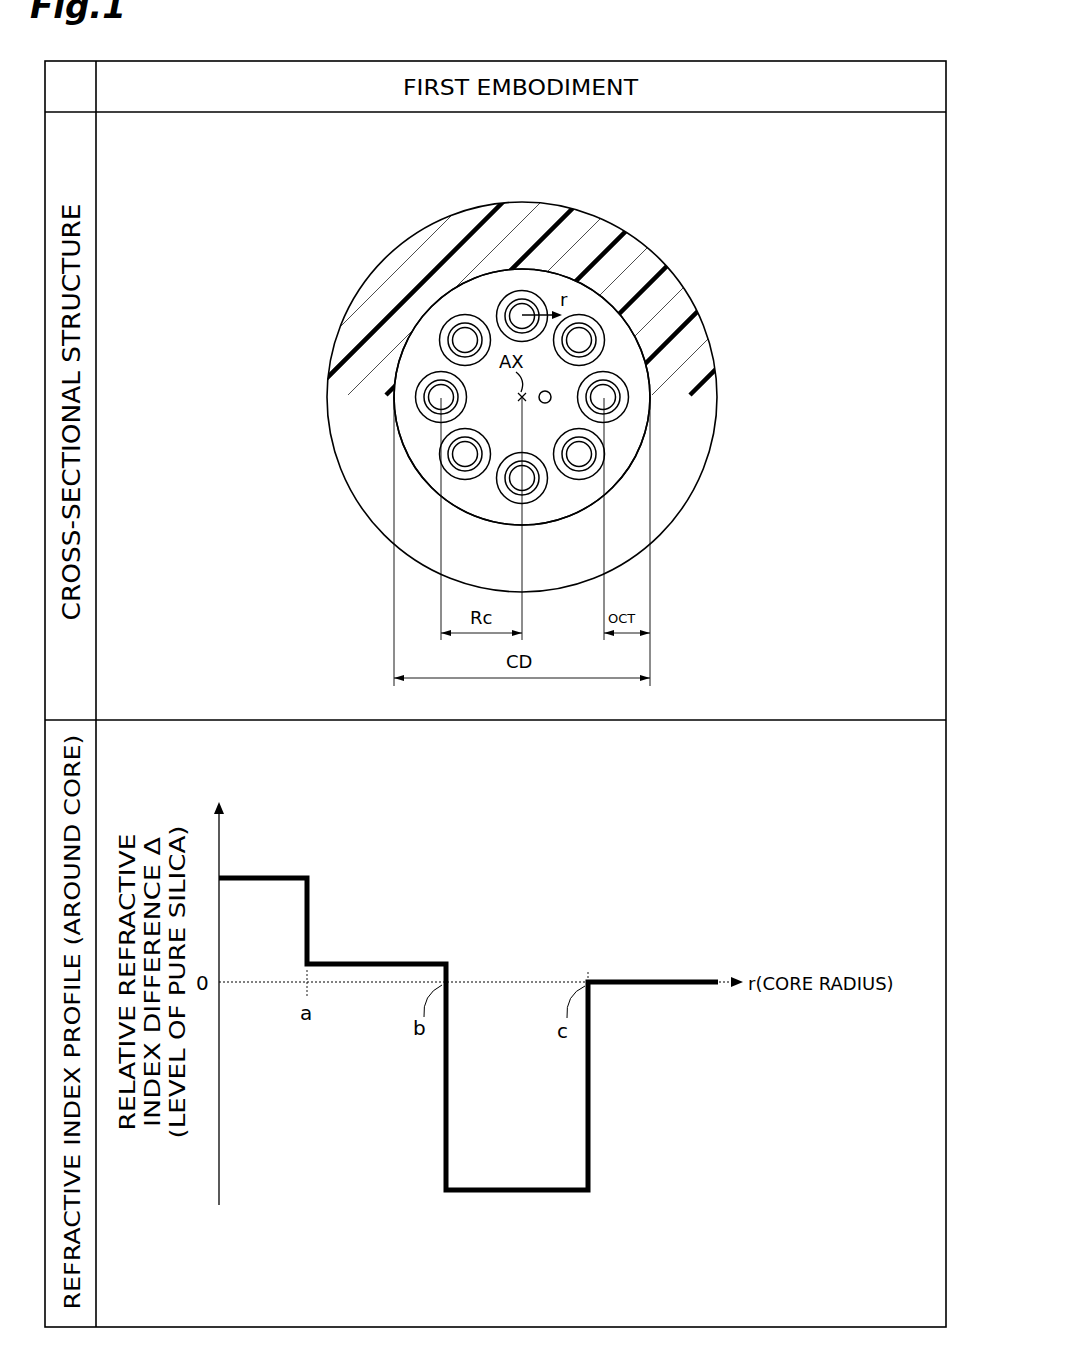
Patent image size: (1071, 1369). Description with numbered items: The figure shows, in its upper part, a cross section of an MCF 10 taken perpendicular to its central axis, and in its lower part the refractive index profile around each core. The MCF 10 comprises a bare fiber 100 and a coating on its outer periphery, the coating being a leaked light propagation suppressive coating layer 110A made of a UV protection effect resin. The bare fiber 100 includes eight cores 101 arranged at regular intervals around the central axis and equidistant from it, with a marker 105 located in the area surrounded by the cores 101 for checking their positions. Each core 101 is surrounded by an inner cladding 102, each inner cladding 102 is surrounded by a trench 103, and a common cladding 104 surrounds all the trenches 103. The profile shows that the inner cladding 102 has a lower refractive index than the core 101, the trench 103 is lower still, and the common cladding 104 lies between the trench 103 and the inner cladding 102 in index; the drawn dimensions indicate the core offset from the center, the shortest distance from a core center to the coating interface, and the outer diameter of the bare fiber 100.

The MCF 10 is at (712, 299).
The bare fiber 100 is at (650, 383).
The core 101 is at (517, 305).
The inner cladding 102 is at (520, 298).
The trench 103 is at (532, 292).
The common cladding 104 is at (555, 290).
The marker 105 is at (553, 392).
The leaked light propagation suppressive coating layer 110A is at (678, 460).